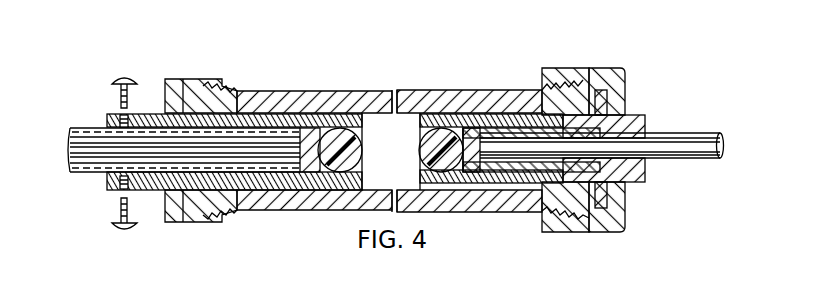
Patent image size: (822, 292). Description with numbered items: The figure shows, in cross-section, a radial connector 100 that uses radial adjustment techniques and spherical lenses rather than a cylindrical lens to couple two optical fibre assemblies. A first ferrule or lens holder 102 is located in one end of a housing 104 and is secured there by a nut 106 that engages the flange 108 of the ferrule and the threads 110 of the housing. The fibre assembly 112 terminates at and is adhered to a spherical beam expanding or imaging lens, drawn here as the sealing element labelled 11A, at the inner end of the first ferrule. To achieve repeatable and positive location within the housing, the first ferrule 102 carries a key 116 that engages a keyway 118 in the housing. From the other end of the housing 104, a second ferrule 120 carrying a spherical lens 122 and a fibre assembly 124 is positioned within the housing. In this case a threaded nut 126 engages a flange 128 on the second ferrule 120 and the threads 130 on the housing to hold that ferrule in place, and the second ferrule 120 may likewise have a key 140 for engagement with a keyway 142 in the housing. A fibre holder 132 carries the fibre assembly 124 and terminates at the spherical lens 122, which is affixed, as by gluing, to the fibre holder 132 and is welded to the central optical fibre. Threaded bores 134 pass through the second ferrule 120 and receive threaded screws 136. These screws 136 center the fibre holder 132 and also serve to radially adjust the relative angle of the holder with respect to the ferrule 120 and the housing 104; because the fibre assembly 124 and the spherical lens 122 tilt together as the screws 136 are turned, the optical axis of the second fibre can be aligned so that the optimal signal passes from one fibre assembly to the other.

The radial connector 100 is at (400, 38).
The first ferrule 102 is at (463, 110).
The housing 104 is at (495, 103).
The nut 106 is at (600, 80).
The flange 108 is at (606, 100).
The threads 110 is at (558, 88).
The fibre assembly 112 is at (718, 160).
The sealing ball 11A is at (443, 134).
The key 116 is at (450, 191).
The keyway 118 is at (528, 211).
The second ferrule 120 is at (298, 110).
The spherical lens 122 is at (361, 127).
The fibre assembly 124 is at (68, 154).
The threaded nut 126 is at (208, 79).
The flange 128 is at (176, 223).
The threads 130 is at (208, 224).
The fibre holder 132 is at (93, 168).
The threaded bores 134 is at (124, 113).
The threaded screws 136 is at (130, 77).
The key 140 is at (340, 193).
The keyway 142 is at (295, 193).